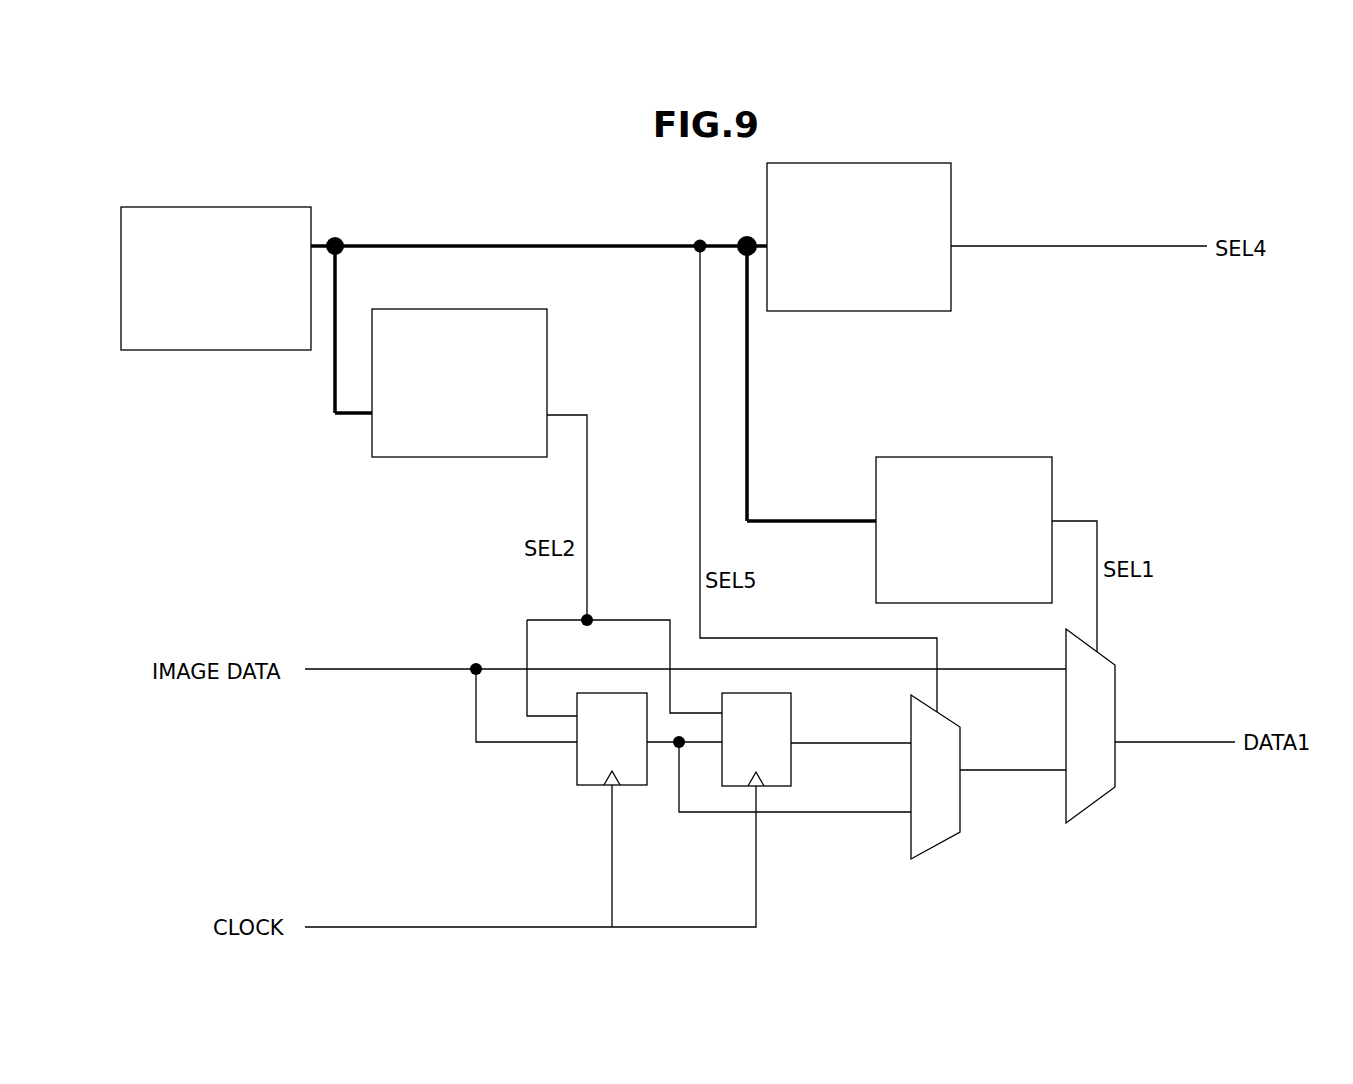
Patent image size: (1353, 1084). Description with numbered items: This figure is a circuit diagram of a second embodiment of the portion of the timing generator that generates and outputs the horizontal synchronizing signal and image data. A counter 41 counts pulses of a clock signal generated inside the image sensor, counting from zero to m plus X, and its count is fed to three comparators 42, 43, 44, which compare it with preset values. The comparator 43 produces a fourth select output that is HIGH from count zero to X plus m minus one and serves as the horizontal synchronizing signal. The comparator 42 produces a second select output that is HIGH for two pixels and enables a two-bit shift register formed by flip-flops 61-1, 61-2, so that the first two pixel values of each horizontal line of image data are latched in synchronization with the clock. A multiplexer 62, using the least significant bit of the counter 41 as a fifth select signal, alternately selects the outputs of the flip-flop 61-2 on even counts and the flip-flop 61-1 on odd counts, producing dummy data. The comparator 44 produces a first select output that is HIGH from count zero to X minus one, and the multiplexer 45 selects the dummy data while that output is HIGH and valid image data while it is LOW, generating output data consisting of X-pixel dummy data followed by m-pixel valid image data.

The counter 41 is at (225, 207).
The comparator 42 is at (505, 309).
The comparator 43 is at (888, 163).
The comparator 44 is at (1003, 457).
The multiplexer 45 is at (1115, 665).
The flip-flop 61-1 is at (577, 765).
The flip-flop 61-2 is at (791, 718).
The multiplexer 62 is at (960, 755).